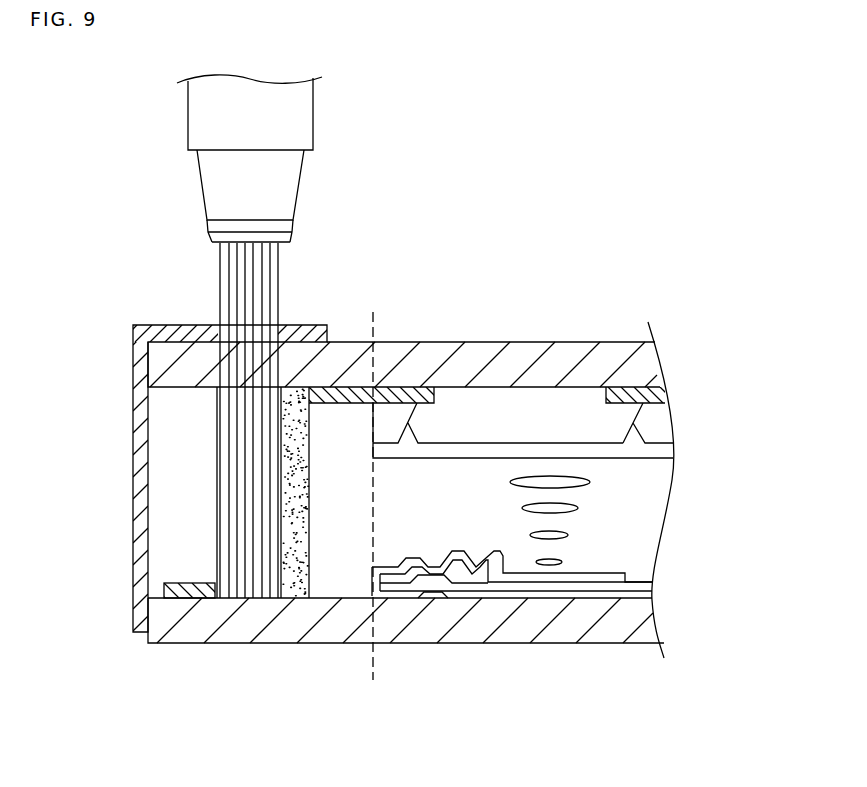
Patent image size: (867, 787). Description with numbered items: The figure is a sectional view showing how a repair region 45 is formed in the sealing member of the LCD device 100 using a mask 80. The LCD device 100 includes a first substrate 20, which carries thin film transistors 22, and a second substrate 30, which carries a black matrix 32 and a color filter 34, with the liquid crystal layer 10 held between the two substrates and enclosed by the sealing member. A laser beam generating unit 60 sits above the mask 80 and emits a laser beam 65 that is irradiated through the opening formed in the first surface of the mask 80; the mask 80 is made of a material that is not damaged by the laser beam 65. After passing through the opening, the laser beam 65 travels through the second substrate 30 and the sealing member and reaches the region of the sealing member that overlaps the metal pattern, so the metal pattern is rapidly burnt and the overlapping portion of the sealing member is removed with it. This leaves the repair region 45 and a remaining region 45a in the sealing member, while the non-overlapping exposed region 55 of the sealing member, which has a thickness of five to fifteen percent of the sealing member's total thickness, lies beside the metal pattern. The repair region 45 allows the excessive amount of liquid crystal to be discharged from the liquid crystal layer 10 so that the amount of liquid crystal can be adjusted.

The liquid crystal layer 10 is at (550, 566).
The first substrate 20 is at (424, 632).
The thin film transistors 22 is at (447, 540).
The second substrate 30 is at (607, 358).
The black matrix 32 is at (437, 398).
The color filter 34 is at (552, 406).
The repair region 45 is at (226, 476).
The remaining region 45a is at (300, 578).
The non-overlapping region 55 is at (192, 592).
The laser beam generating unit 60 is at (340, 140).
The laser beam 65 is at (268, 278).
The mask 80 is at (133, 506).
The LCD device 100 is at (650, 249).